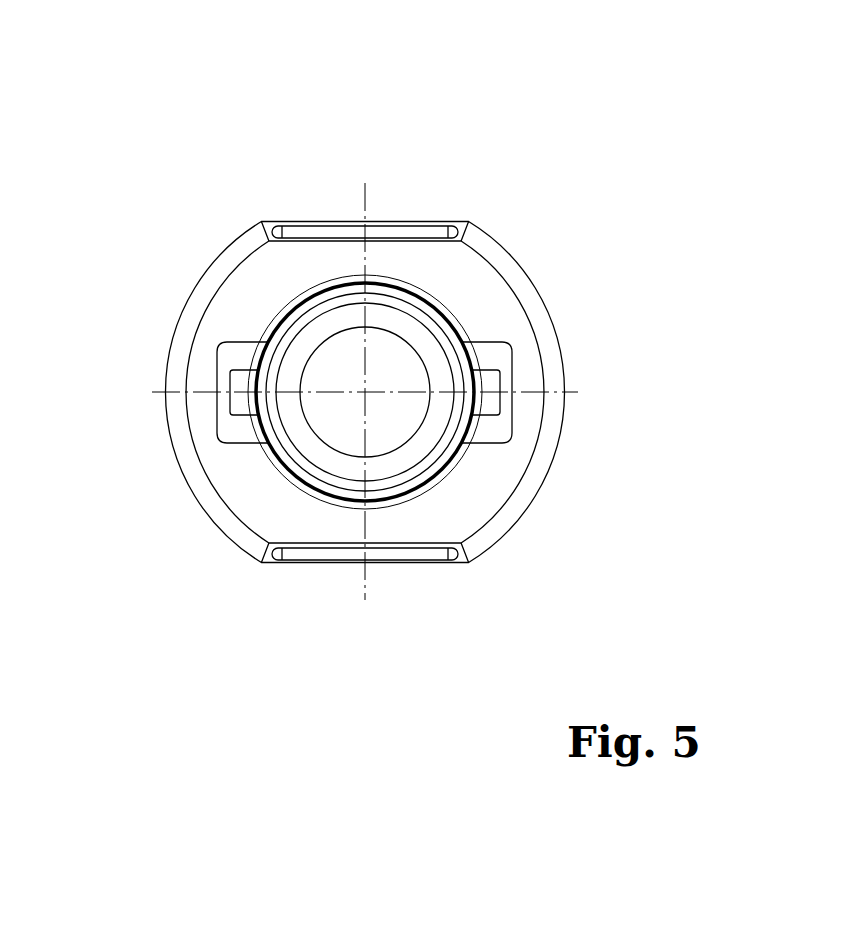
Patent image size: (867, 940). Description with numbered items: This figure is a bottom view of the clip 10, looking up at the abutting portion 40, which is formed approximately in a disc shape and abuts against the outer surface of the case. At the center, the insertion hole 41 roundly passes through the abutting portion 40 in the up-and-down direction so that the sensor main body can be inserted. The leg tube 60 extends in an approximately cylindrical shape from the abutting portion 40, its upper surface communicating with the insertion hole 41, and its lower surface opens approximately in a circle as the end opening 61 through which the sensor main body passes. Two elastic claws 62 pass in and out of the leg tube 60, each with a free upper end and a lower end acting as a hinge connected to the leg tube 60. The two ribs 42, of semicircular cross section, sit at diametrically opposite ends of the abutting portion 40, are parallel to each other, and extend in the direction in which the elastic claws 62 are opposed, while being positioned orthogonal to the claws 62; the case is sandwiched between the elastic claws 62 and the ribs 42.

The connector assembly 10 is at (226, 115).
The abutting portion 40 is at (252, 502).
The insertion hole 41 is at (397, 357).
The rib 42 is at (397, 230).
The leg tube 60 is at (445, 485).
The end opening 61 is at (333, 370).
The elastic claw 62 is at (238, 380).